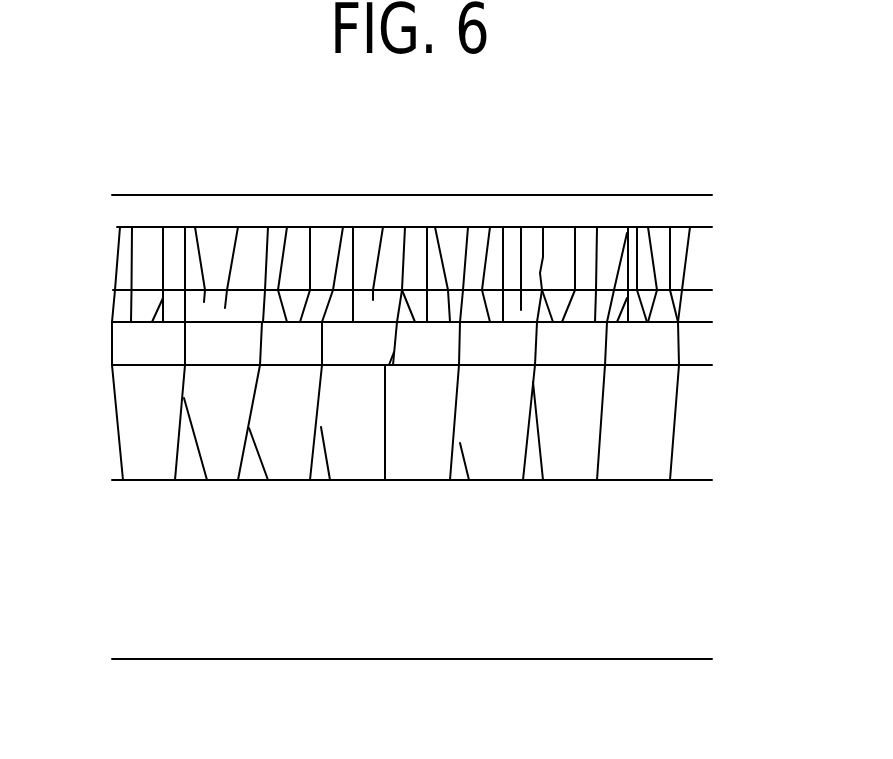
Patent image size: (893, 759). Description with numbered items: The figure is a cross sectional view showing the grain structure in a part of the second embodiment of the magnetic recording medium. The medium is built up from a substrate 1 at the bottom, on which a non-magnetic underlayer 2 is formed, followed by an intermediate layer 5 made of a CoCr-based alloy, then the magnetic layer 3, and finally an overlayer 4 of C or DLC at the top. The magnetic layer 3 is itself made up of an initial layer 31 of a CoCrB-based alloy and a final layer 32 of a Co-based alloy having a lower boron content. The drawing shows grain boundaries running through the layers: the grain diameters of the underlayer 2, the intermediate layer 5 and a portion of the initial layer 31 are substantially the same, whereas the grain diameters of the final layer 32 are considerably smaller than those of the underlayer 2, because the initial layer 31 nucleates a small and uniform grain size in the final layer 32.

The substrate 1 is at (117, 578).
The non-magnetic underlayer 2 is at (110, 422).
The magnetic layer 3 is at (750, 223).
The initial layer 31 is at (108, 307).
The final layer 32 is at (110, 255).
The overlayer 4 is at (118, 213).
The intermediate layer 5 is at (103, 345).